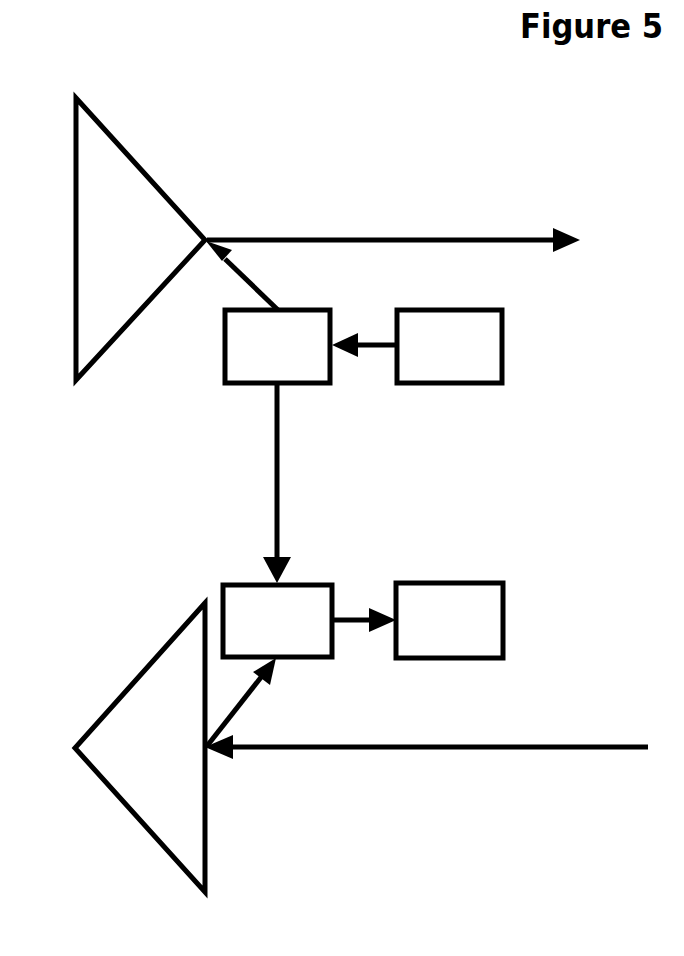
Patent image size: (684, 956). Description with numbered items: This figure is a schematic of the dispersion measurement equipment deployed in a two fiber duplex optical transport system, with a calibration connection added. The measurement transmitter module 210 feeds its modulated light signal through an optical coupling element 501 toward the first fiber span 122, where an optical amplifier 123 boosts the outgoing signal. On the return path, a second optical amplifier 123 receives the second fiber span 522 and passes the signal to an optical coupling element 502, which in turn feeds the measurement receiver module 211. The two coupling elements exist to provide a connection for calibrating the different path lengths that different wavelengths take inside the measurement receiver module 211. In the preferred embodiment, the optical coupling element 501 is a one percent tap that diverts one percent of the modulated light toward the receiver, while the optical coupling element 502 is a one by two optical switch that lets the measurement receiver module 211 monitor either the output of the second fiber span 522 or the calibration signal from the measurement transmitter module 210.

The first fiber span 122 is at (393, 226).
The optical amplifiers 123 is at (140, 495).
The measurement transmitter module 210 is at (417, 346).
The measurement receiver module 211 is at (417, 620).
The optical coupling element 501 is at (268, 412).
The optical coupling element 502 is at (269, 665).
The second fiber span 522 is at (426, 733).